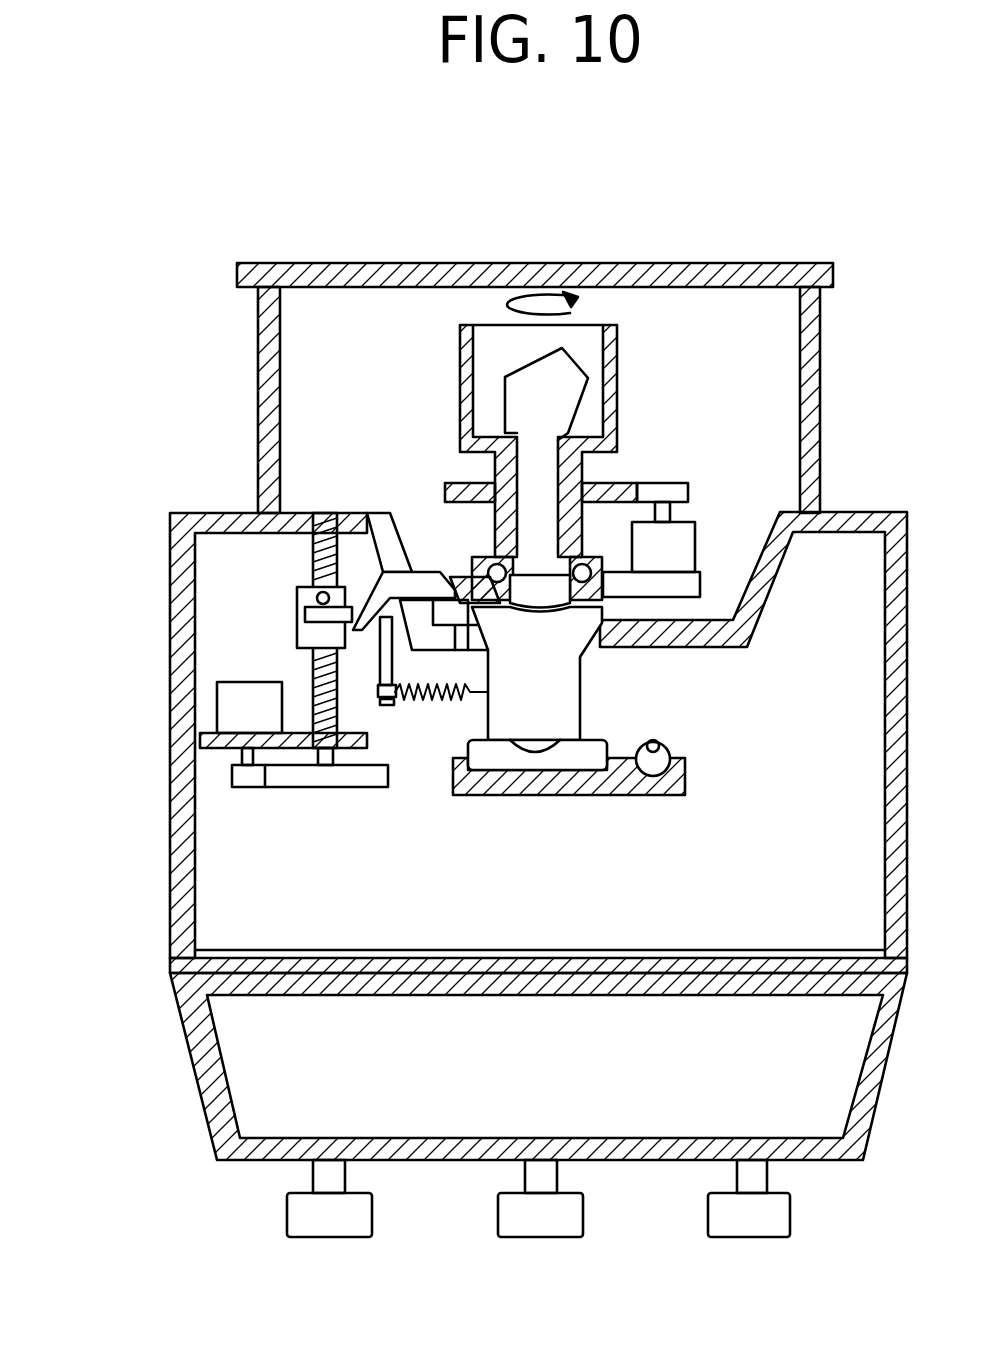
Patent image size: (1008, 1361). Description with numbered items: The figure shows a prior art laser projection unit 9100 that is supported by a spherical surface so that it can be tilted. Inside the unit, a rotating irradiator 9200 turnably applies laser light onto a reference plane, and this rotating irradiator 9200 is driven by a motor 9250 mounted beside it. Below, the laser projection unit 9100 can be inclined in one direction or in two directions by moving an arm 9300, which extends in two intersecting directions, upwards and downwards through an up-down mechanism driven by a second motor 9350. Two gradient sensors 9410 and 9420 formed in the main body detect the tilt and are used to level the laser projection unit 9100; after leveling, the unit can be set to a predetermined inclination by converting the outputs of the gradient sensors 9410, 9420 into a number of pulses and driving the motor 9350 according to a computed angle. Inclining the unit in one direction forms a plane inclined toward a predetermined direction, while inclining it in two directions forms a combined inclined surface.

The laser projection unit 9100 is at (562, 710).
The rotating irradiator 9200 is at (617, 358).
The motor 9250 is at (697, 550).
The arm 9300 is at (427, 572).
The motor 9350 is at (240, 680).
The gradient sensor 9410 is at (487, 740).
The gradient sensor 9420 is at (670, 744).